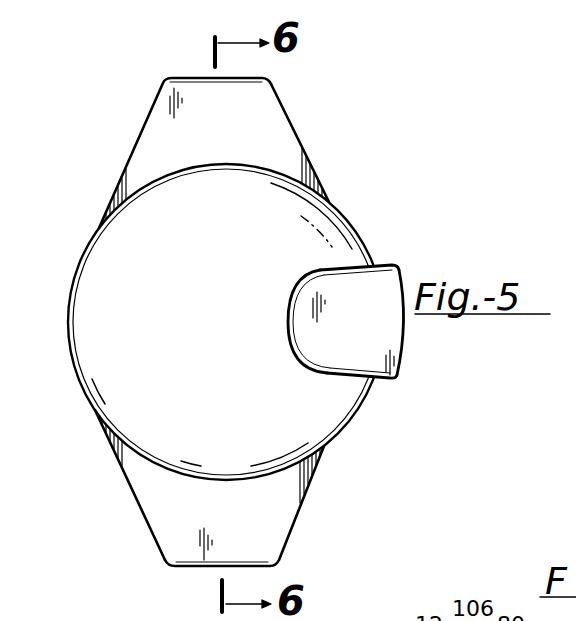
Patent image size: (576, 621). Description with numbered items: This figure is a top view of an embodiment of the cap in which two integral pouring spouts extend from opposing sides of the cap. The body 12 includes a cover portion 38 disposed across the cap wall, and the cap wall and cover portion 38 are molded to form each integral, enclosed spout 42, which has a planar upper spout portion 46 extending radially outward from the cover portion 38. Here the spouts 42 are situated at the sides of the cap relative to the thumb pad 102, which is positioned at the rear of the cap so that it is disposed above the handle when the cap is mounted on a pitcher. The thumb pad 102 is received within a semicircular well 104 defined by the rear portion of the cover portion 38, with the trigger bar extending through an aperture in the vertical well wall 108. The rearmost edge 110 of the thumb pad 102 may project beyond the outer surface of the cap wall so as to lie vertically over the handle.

The body 12 is at (256, 325).
The cover portion 38 is at (107, 252).
The enclosed spout 42 is at (131, 148).
The upper spout portion 46 is at (277, 133).
The thumb pad 102 is at (342, 299).
The semicircular well 104 is at (296, 353).
The vertical well wall 108 is at (293, 328).
The rearmost edge 110 is at (405, 352).